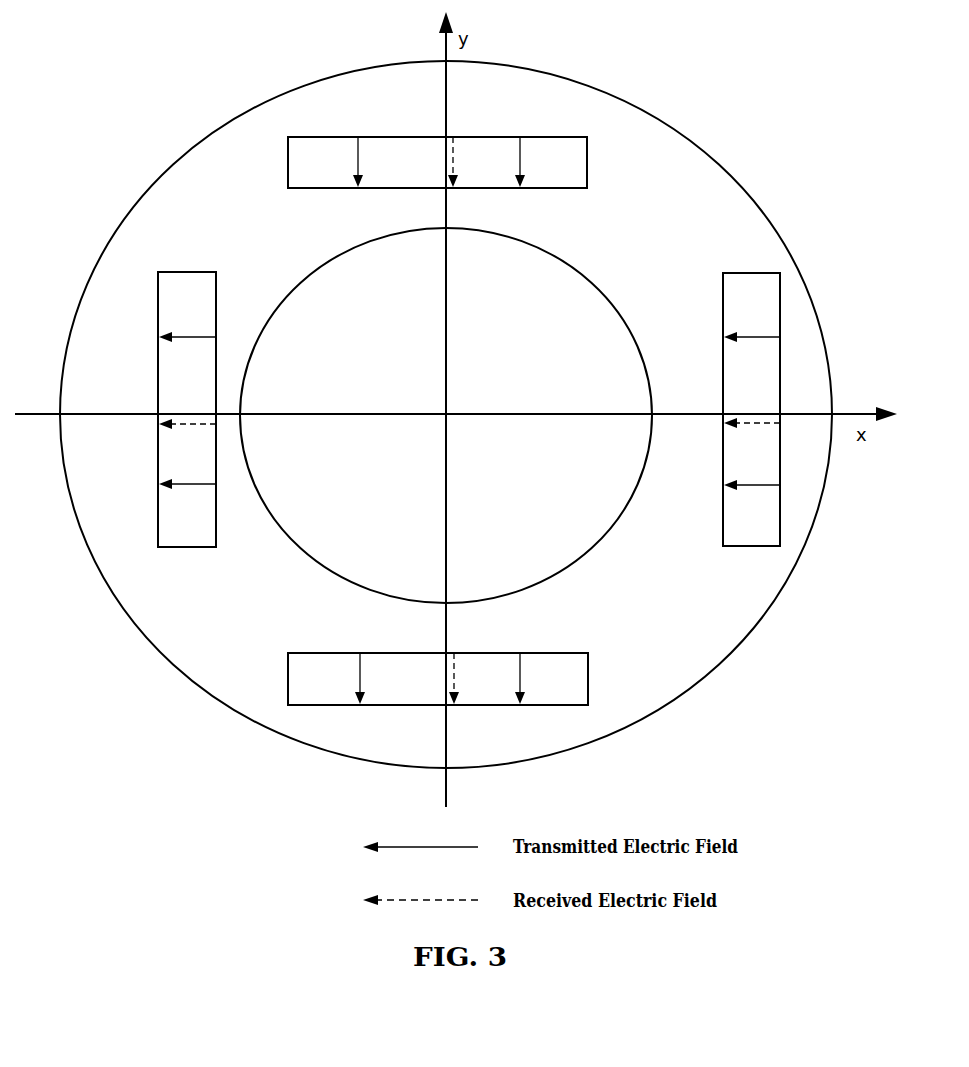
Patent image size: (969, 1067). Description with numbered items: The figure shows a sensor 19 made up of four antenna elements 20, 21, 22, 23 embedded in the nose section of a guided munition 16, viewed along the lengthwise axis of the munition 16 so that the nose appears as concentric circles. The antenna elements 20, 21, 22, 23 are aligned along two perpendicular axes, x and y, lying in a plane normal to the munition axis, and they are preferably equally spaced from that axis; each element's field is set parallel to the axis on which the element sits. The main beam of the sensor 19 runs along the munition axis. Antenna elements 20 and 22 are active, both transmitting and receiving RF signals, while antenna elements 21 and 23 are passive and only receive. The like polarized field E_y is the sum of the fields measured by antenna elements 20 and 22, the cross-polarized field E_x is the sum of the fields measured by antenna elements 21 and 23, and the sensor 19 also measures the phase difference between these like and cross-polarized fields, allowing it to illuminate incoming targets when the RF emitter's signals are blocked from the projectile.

The guided munition 16 is at (385, 67).
The sensor 19 is at (236, 772).
The antenna element 20 is at (552, 188).
The antenna element 21 is at (722, 525).
The antenna element 22 is at (318, 653).
The antenna element 23 is at (216, 285).